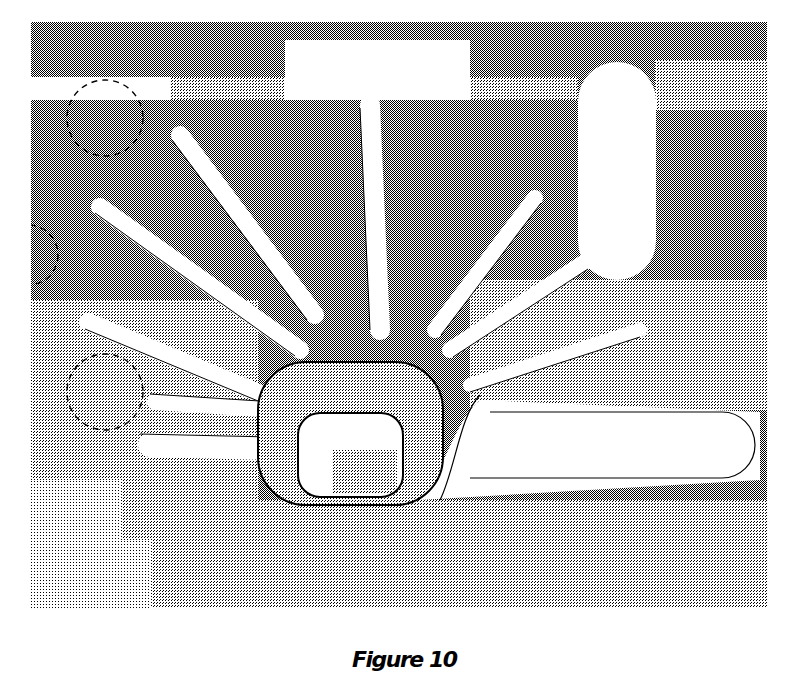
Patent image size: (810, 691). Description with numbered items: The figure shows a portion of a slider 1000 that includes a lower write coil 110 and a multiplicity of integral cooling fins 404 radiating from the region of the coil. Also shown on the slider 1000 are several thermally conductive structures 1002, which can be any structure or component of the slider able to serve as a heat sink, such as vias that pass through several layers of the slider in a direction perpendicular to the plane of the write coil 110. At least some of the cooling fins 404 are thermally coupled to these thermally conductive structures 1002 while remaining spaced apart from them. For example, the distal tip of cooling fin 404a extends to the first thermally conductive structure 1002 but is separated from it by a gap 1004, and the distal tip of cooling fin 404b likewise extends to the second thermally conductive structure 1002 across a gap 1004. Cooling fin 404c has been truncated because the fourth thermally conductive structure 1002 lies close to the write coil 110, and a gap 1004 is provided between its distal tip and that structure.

The slider 1000 is at (392, 80).
The thermally conductive structure 1002 is at (622, 140).
The gap 1004 is at (150, 143).
The cooling fin 404 is at (385, 153).
The cooling fin 404a is at (507, 293).
The cooling fin 404b is at (198, 153).
The cooling fin 404c is at (207, 402).
The lower write coil 110 is at (400, 300).